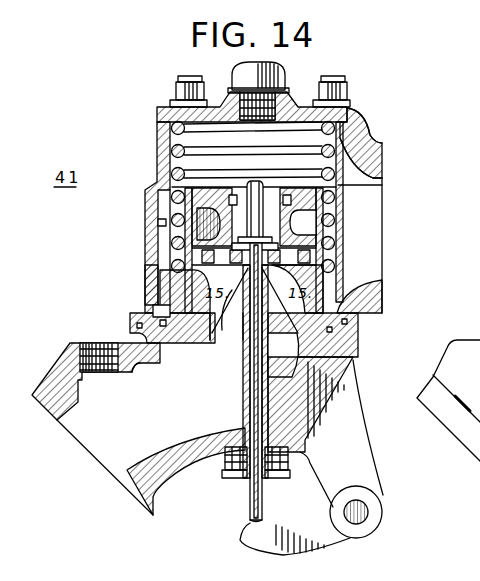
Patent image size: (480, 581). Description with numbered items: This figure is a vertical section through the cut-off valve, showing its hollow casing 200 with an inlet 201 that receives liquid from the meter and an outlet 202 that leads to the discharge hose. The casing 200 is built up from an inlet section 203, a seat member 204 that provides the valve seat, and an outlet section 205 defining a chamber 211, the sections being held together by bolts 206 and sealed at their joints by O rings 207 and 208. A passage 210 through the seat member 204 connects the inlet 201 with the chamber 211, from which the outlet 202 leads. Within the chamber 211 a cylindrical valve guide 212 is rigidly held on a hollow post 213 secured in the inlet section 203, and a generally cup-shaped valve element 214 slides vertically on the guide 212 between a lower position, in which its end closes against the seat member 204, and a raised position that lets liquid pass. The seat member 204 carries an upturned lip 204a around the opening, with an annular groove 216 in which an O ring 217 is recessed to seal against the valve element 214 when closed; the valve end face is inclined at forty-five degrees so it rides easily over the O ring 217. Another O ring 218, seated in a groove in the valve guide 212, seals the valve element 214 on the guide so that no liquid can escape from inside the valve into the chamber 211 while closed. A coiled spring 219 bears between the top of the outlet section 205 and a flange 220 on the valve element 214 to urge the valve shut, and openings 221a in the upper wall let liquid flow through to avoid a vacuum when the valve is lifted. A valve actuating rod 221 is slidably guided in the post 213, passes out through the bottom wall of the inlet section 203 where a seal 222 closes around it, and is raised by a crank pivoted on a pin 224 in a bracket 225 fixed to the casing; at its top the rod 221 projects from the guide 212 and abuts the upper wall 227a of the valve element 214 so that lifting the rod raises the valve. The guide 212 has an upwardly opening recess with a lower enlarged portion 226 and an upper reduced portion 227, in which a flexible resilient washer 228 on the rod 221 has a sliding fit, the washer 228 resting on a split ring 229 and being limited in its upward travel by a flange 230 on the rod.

The hollow casing 200 is at (70, 342).
The inlet 201 is at (125, 472).
The outlet 202 is at (382, 178).
The inlet section 203 is at (193, 468).
The seat member 204 is at (358, 332).
The upturned lip 204a is at (342, 290).
The outlet section 205 is at (362, 138).
The bolts 206 is at (173, 96).
The O ring 207 is at (142, 330).
The O ring 208 is at (137, 366).
The passage 210 is at (214, 345).
The chamber 211 is at (158, 222).
The cylindrical valve guide 212 is at (156, 183).
The hollow post 213 is at (243, 402).
The valve element 214 is at (382, 193).
The annular groove 216 is at (286, 355).
The O ring 217 is at (382, 293).
The O ring 218 is at (172, 268).
The coiled spring 219 is at (172, 135).
The flange 220 is at (168, 286).
The valve actuating rod 221 is at (252, 512).
The openings 221a is at (172, 151).
The seal 222 is at (300, 477).
The pin 224 is at (366, 516).
The bracket 225 is at (356, 437).
The lower enlarged portion 226 is at (326, 239).
The upper reduced portion 227 is at (150, 208).
The upper wall 227a is at (373, 150).
The washer 228 is at (152, 254).
The split ring 229 is at (222, 332).
The flange 230 is at (329, 216).